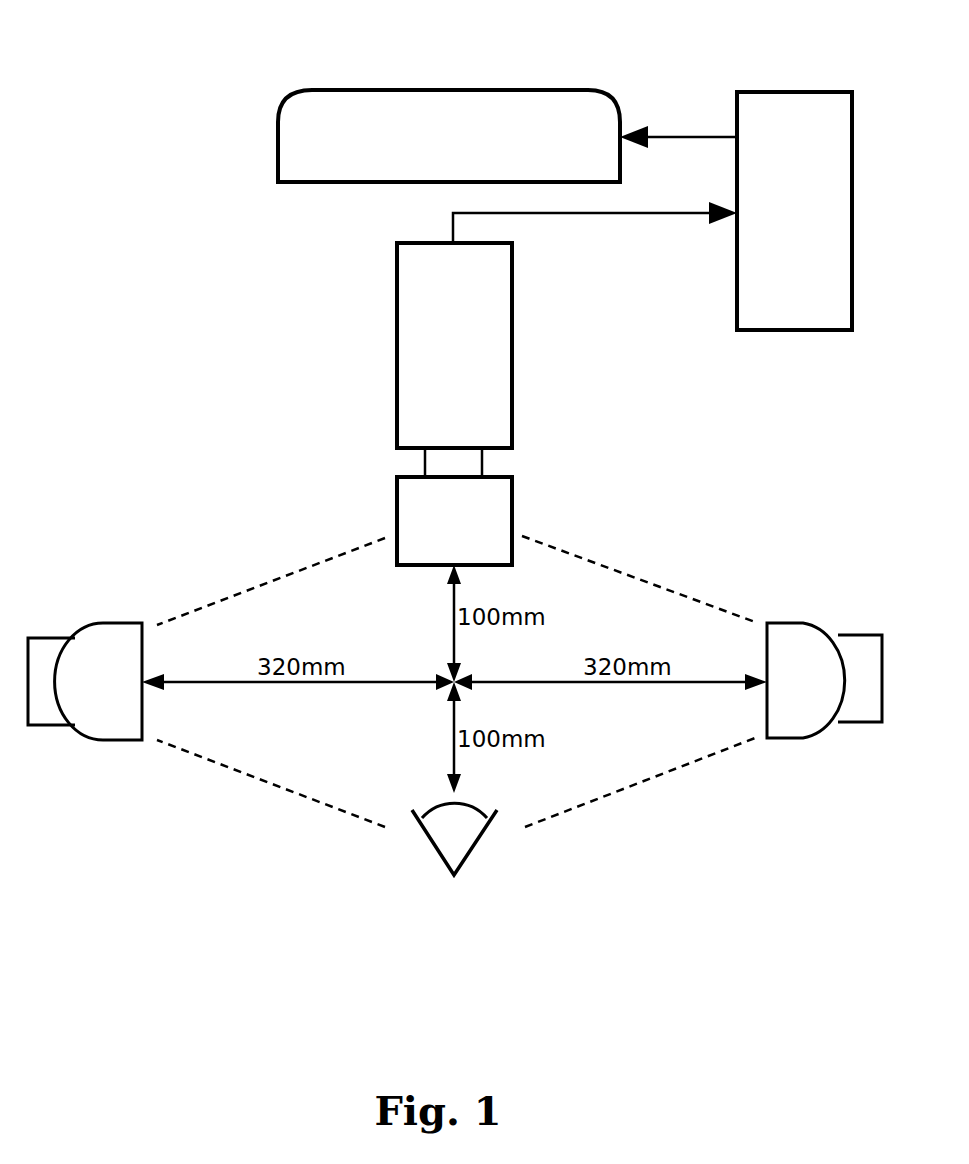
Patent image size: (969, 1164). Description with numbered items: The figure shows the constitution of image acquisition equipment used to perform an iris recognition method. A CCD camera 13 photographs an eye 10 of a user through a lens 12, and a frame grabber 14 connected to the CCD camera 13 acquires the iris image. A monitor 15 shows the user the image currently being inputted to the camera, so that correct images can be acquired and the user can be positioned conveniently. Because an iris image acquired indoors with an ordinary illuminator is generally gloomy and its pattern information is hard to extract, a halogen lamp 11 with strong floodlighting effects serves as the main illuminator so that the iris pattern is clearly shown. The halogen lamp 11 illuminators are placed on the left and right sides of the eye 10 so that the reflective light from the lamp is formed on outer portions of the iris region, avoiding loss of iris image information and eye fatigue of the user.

The eye 10 is at (440, 857).
The halogen lamp 11 is at (103, 727).
The lens 12 is at (500, 500).
The CCD camera 13 is at (493, 340).
The frame grabber 14 is at (800, 110).
The monitor 15 is at (438, 108).